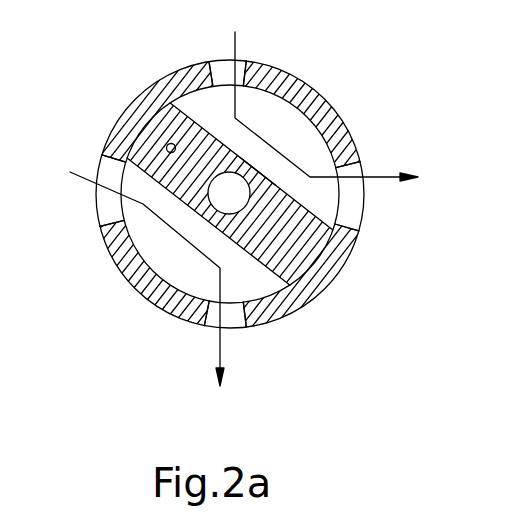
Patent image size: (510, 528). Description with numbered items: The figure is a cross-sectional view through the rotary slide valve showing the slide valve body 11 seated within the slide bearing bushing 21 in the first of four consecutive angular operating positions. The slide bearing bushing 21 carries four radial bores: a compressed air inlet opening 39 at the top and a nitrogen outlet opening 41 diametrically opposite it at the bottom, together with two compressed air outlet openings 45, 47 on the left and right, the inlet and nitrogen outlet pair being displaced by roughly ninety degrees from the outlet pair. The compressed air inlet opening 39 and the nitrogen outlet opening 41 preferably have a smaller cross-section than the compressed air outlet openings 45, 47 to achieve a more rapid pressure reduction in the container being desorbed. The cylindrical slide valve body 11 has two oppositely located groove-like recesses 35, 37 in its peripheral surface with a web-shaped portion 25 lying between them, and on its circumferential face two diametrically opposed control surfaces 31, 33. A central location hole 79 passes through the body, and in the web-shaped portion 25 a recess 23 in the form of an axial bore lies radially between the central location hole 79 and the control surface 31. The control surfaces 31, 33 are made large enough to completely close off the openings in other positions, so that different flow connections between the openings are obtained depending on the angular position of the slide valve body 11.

The slide valve body 11 is at (283, 260).
The slide bearing bushing 21 is at (263, 72).
The recess 23 is at (166, 147).
The web-shaped portion 25 is at (313, 247).
The control surface 31 is at (152, 110).
The control surface 33 is at (315, 250).
The groove-like recess 35 is at (158, 258).
The groove-like recess 37 is at (290, 123).
The compressed air inlet opening 39 is at (215, 67).
The nitrogen outlet opening 41 is at (235, 326).
The compressed air outlet opening 45 is at (105, 208).
The compressed air outlet opening 47 is at (355, 210).
The central location hole 79 is at (261, 179).